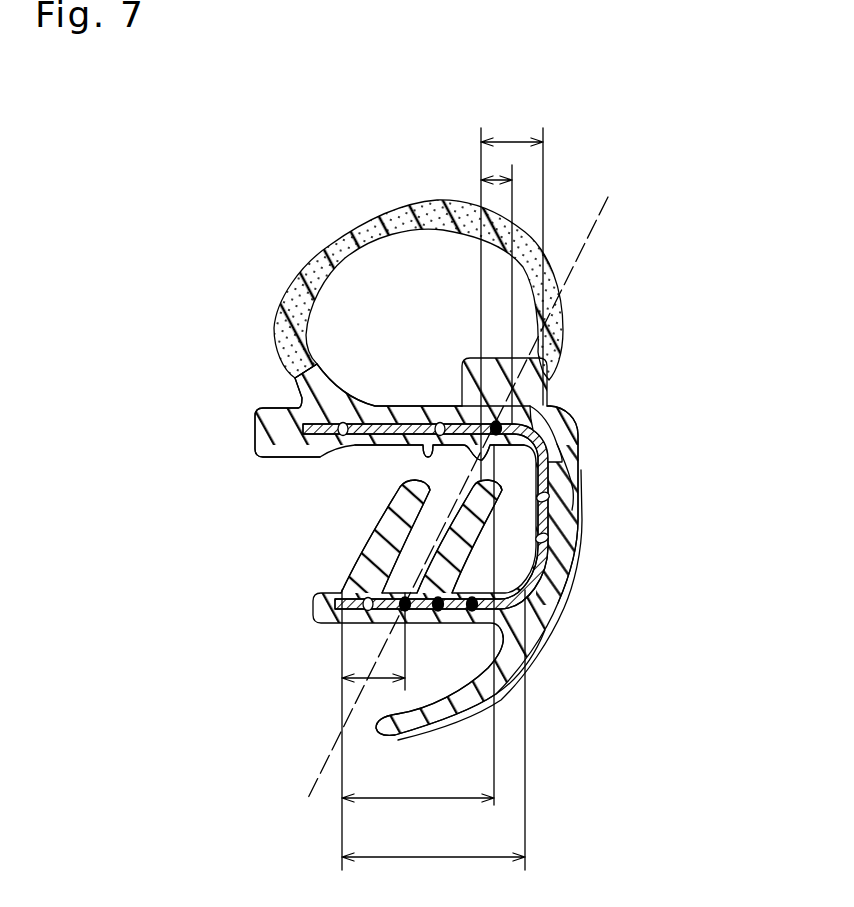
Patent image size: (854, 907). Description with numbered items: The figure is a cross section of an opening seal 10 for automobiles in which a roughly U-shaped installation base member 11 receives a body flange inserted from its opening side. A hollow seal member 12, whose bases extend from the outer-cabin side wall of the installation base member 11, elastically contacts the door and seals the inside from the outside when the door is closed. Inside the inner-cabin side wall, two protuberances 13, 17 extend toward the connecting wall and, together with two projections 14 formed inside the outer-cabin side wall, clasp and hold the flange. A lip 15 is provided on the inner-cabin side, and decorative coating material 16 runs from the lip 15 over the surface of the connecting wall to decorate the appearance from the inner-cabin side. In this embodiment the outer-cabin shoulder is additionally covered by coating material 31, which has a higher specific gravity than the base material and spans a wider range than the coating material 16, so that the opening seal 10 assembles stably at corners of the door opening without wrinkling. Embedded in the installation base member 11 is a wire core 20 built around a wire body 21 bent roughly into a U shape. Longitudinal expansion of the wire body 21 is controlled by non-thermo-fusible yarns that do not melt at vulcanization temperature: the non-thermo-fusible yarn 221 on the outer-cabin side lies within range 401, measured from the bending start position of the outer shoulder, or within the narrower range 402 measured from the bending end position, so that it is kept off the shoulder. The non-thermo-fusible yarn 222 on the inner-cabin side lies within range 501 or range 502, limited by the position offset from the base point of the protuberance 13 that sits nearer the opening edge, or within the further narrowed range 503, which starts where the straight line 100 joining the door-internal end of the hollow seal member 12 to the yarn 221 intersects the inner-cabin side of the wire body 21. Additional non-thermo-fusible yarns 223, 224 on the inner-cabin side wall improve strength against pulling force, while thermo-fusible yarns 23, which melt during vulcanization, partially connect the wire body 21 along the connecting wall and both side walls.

The opening seal for automobiles 10 is at (673, 204).
The installation base member 11 is at (557, 522).
The hollow seal member 12 is at (305, 258).
The protuberance 13 is at (385, 522).
The projections 14 is at (413, 456).
The lip 15 is at (440, 718).
The decorative coating material 16 is at (563, 600).
The protuberance 17 is at (458, 522).
The wire core 20 is at (315, 458).
The wire body 21 is at (305, 403).
The thermo-fusible yarn 23 is at (340, 424).
The coating material 31 is at (563, 420).
The straight line 100 is at (592, 240).
The non-thermo-fusible yarn 221 is at (493, 425).
The non-thermo-fusible yarn 222 is at (400, 612).
The non-thermo-fusible yarn 223 is at (438, 611).
The non-thermo-fusible yarn 224 is at (472, 611).
The range 401 is at (512, 299).
The range 402 is at (498, 288).
The range 501 is at (433, 730).
The range 502 is at (418, 625).
The range 503 is at (375, 662).